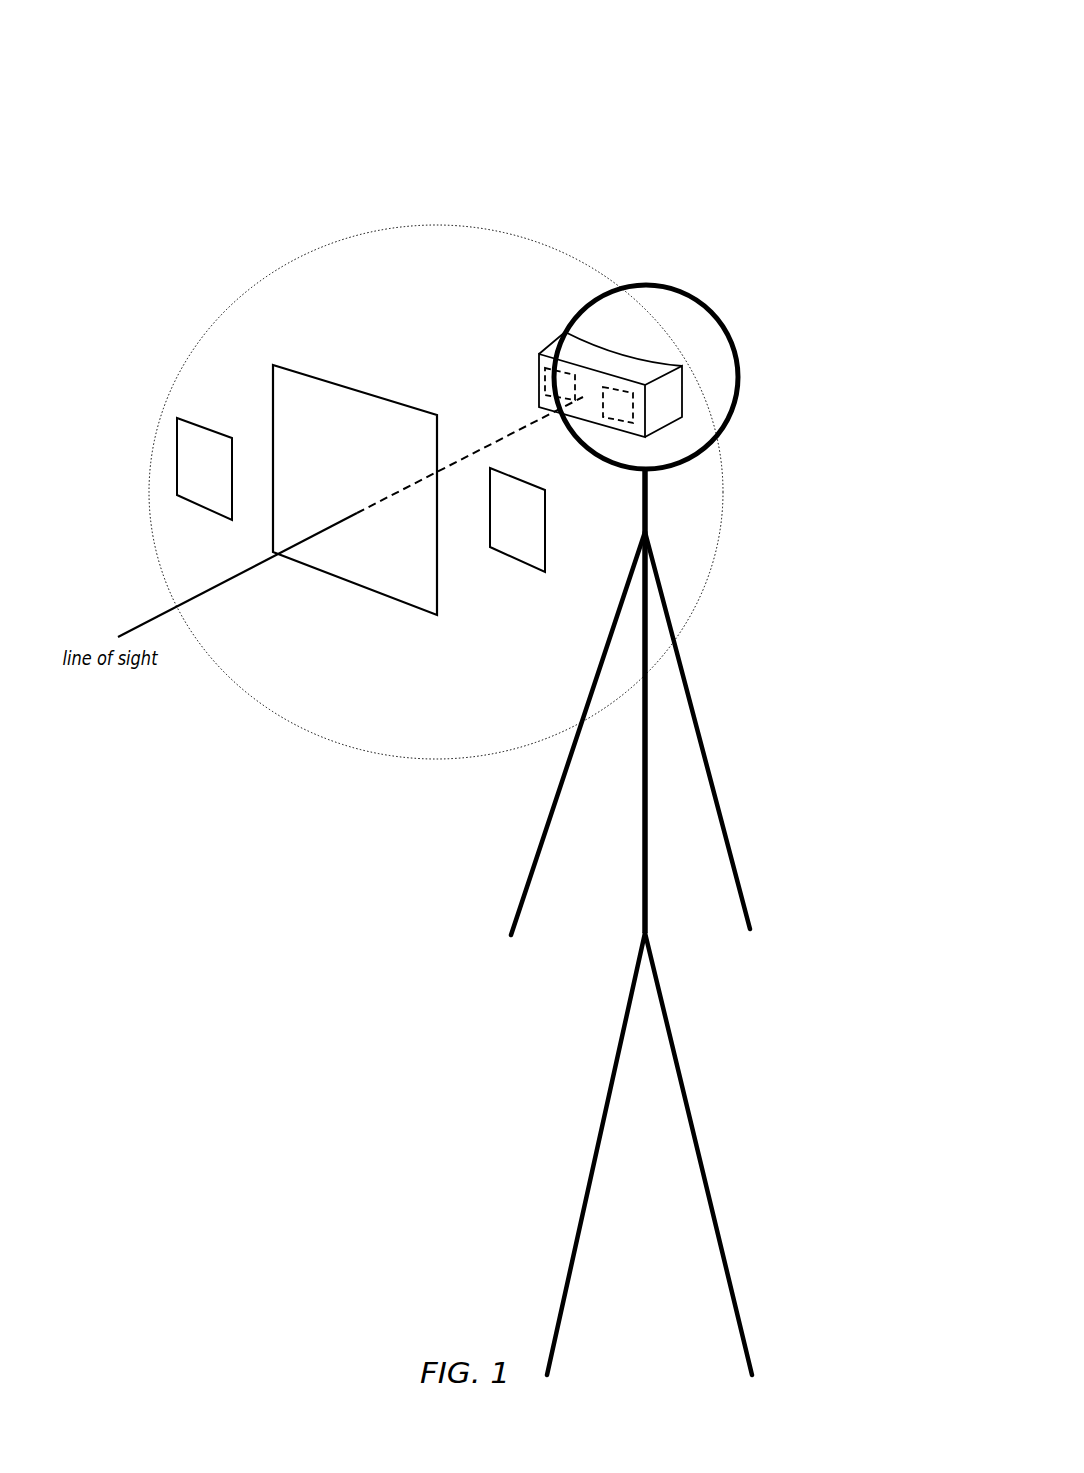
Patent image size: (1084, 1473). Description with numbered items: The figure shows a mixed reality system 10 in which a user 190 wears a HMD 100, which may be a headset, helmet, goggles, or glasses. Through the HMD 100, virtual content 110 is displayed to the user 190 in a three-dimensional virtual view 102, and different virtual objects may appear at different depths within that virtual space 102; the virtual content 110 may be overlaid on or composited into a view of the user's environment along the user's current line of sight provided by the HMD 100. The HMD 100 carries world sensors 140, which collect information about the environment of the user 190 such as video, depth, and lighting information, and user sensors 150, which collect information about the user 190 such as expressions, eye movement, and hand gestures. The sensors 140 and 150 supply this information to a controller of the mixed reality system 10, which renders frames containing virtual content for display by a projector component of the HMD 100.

The mixed reality system 10 is at (812, 145).
The HMD 100 is at (668, 393).
The 3D virtual view 102 is at (722, 477).
The virtual content 110 is at (175, 432).
The world sensors 140 is at (538, 378).
The user sensors 150 is at (602, 403).
The user 190 is at (705, 743).